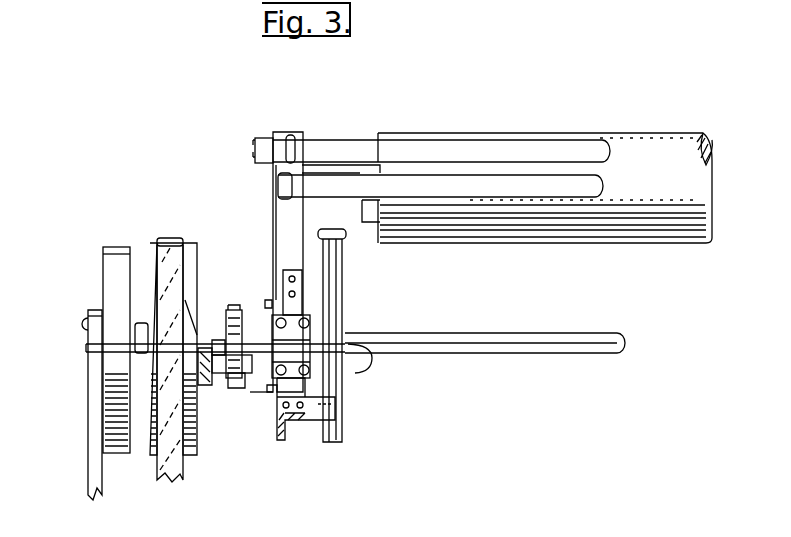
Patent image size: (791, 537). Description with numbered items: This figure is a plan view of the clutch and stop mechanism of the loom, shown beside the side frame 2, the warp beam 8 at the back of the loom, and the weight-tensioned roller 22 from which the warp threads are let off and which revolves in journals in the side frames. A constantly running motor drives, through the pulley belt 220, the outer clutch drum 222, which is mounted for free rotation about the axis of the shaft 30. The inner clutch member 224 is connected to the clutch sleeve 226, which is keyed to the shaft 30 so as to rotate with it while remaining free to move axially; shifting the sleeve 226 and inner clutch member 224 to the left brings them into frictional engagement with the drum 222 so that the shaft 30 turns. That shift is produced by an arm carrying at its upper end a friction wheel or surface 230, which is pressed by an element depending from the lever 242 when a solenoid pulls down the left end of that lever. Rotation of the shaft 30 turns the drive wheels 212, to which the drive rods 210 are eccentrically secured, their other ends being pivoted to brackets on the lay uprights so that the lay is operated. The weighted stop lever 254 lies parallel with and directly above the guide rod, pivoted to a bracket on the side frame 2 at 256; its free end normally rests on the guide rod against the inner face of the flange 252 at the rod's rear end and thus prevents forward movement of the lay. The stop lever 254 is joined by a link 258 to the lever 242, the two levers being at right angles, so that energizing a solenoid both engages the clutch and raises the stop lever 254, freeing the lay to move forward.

The side frame 2 is at (288, 223).
The warp beam 8 is at (337, 148).
The roller 22 is at (637, 142).
The shaft 30 is at (512, 354).
The drive rod 210 is at (95, 387).
The drive wheel 212 is at (115, 270).
The pulley belt 220 is at (165, 238).
The outer clutch drum 222 is at (190, 250).
The inner clutch member 224 is at (203, 390).
The clutch sleeve 226 is at (213, 375).
The friction wheel or surface 230 is at (224, 318).
The lever 242 is at (205, 340).
The flange 252 is at (345, 236).
The weighted lever 254 is at (330, 306).
The pivot 256 is at (318, 418).
The link 258 is at (358, 364).